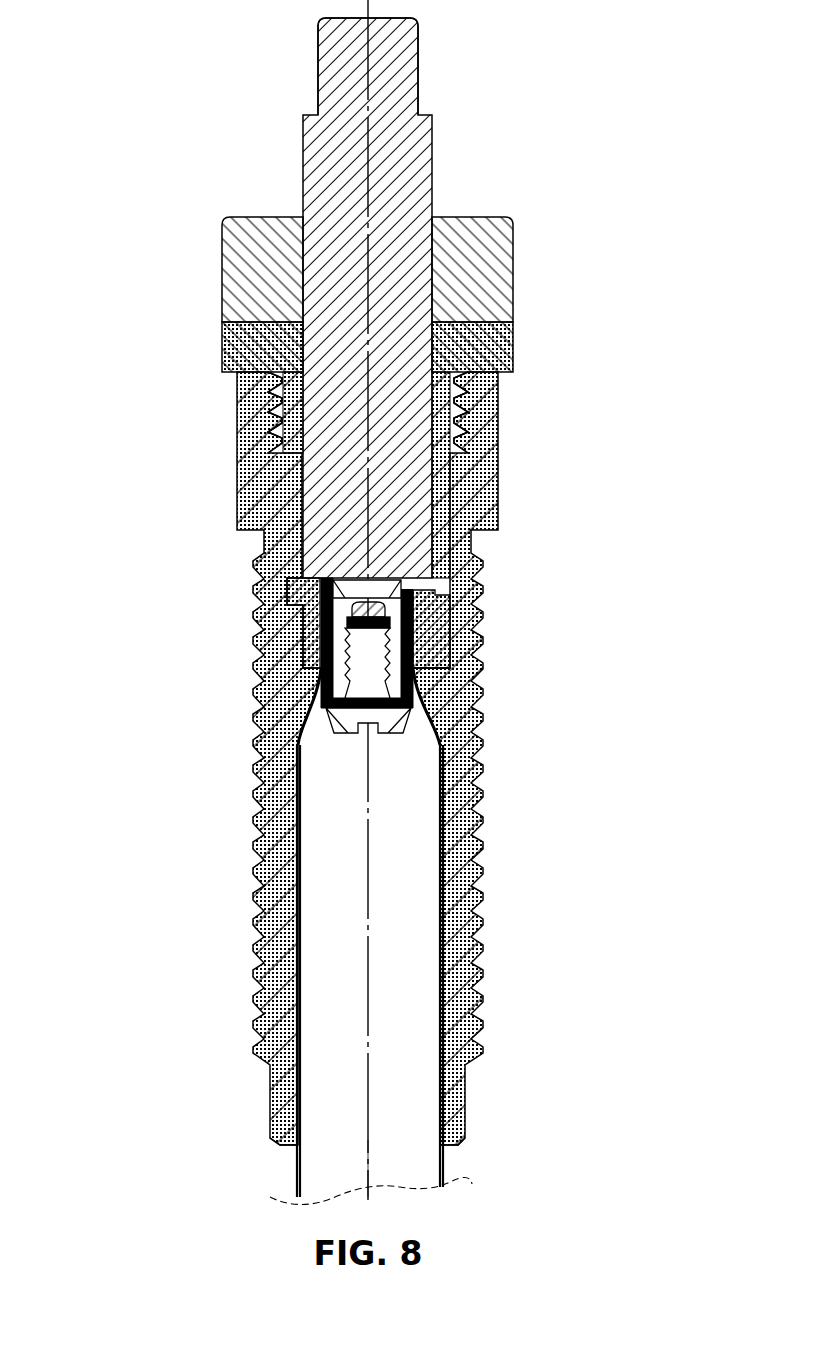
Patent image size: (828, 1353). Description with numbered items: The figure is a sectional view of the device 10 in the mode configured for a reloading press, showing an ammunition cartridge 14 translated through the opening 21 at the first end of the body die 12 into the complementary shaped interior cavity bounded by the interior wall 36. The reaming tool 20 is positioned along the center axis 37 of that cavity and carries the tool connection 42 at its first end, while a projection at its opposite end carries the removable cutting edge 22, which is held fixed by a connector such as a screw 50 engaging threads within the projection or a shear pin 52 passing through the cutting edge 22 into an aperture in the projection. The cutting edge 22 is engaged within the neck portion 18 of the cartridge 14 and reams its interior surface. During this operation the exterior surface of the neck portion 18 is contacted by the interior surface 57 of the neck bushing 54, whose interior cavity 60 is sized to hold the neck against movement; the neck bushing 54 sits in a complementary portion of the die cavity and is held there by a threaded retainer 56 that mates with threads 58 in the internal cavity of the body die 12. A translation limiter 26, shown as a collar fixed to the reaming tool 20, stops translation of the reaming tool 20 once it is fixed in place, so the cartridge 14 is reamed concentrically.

The device 10 is at (584, 270).
The body die 12 is at (498, 484).
The ammunition cartridge 14 is at (292, 1168).
The neck portion 18 is at (420, 633).
The reaming tool 20 is at (432, 152).
The opening 21 is at (295, 1145).
The cutting edge 22 is at (333, 695).
The translation limiter 26 is at (222, 232).
The interior wall 36 is at (441, 692).
The center axis 37 is at (368, 1140).
The tool connection 42 is at (407, 83).
The screw 50 is at (338, 738).
The shear pin 52 is at (353, 584).
The neck bushing 54 is at (310, 628).
The retainer 56 is at (222, 345).
The interior surface 57 is at (321, 653).
The internal threads 58 is at (270, 408).
The interior cavity 60 is at (417, 590).